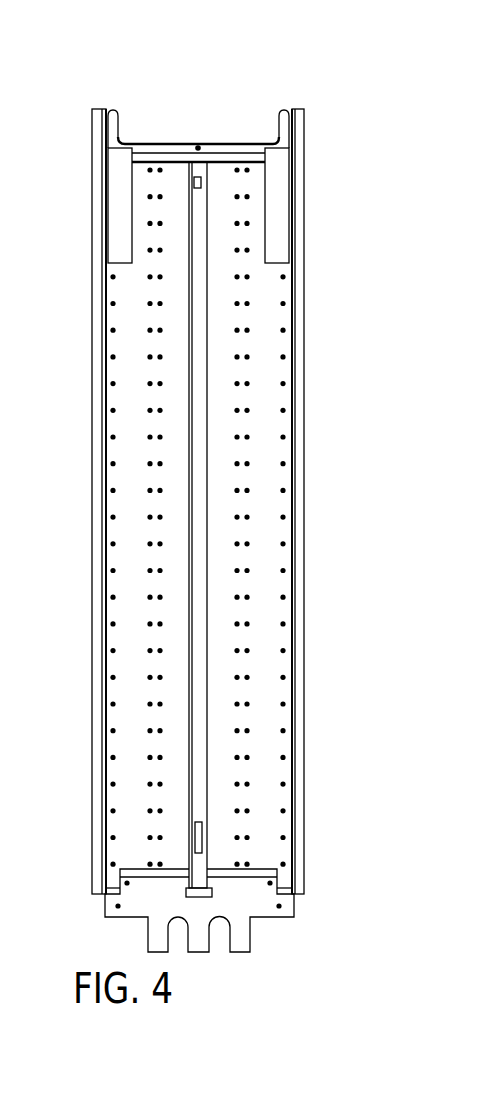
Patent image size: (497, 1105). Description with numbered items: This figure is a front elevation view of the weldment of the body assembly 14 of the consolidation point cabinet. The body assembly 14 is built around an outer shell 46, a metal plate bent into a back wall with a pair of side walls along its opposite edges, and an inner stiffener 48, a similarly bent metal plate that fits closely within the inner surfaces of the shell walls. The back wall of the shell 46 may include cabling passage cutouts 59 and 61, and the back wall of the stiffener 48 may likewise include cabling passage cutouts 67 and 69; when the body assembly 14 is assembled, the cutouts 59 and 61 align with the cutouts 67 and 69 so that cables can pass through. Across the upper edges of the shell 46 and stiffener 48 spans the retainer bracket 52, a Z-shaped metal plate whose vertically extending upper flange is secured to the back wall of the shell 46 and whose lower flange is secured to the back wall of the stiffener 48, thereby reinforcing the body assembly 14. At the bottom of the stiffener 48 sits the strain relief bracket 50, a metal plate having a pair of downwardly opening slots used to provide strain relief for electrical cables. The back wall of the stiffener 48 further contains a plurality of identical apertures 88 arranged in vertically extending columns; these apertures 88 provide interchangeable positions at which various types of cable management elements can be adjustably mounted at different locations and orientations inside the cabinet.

The body assembly 14 is at (327, 96).
The outer shell 46 is at (92, 366).
The inner stiffener 48 is at (118, 480).
The strain relief bracket 50 is at (136, 913).
The retainer bracket 52 is at (152, 142).
The cabling passage cutout 59 is at (109, 126).
The cabling passage cutout 61 is at (286, 126).
The cabling passage cutout 67 is at (106, 205).
The cabling passage cutout 69 is at (289, 221).
The apertures 88 is at (237, 545).